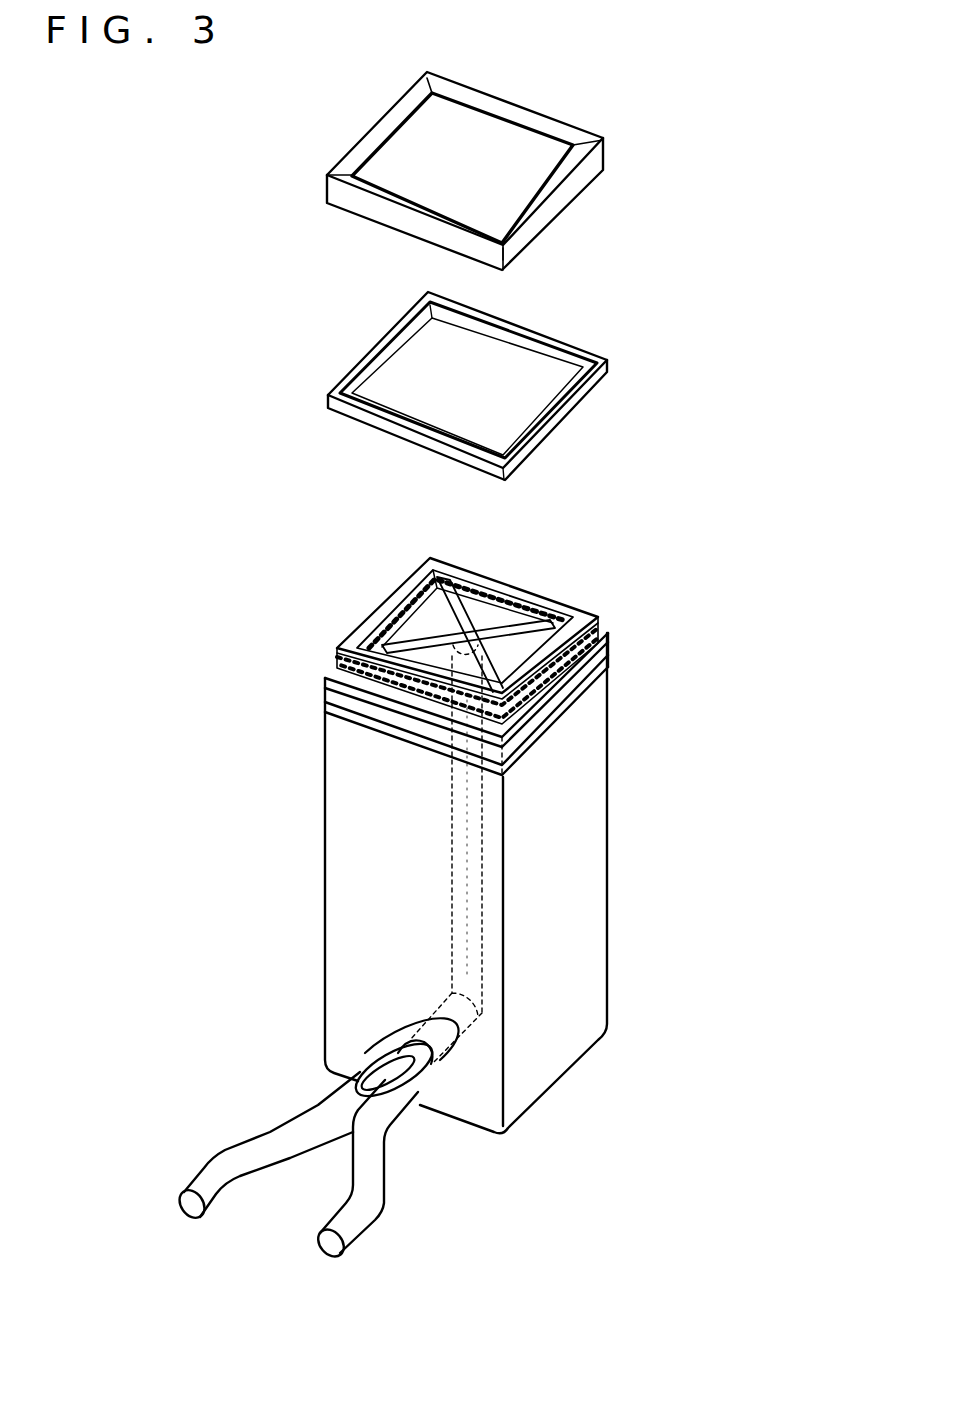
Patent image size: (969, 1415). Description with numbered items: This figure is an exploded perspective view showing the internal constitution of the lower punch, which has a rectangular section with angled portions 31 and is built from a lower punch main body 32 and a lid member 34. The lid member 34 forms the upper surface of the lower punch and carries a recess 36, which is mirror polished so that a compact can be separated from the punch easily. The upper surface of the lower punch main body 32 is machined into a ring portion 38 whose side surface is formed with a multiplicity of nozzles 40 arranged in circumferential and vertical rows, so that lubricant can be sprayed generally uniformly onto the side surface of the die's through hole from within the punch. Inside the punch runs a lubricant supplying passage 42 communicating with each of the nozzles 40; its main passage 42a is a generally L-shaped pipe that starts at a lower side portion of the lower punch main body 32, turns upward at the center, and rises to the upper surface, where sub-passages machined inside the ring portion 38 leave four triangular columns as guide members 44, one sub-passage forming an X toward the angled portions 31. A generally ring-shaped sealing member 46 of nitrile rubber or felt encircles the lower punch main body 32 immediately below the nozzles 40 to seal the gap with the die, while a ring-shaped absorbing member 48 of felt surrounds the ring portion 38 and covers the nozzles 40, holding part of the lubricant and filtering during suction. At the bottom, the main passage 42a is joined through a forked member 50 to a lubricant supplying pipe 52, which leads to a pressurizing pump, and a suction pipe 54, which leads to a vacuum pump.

The angled portions 31 is at (425, 71).
The lower punch main body 32 is at (340, 980).
The lid member 34 is at (365, 128).
The recess 36 is at (535, 150).
The ring portion 38 is at (395, 592).
The nozzles 40 is at (340, 676).
The lubricant supplying passage 42 is at (441, 820).
The main passage 42a is at (470, 858).
The guide members 44 is at (500, 652).
The sealing member 46 is at (603, 652).
The absorbing member 48 is at (602, 377).
The forked member 50 is at (430, 1093).
The lubricant supplying pipe 52 is at (205, 1180).
The suction pipe 54 is at (357, 1223).